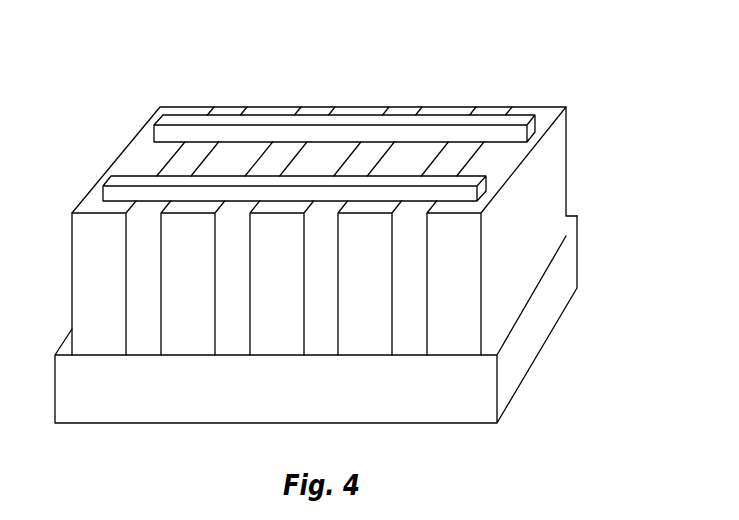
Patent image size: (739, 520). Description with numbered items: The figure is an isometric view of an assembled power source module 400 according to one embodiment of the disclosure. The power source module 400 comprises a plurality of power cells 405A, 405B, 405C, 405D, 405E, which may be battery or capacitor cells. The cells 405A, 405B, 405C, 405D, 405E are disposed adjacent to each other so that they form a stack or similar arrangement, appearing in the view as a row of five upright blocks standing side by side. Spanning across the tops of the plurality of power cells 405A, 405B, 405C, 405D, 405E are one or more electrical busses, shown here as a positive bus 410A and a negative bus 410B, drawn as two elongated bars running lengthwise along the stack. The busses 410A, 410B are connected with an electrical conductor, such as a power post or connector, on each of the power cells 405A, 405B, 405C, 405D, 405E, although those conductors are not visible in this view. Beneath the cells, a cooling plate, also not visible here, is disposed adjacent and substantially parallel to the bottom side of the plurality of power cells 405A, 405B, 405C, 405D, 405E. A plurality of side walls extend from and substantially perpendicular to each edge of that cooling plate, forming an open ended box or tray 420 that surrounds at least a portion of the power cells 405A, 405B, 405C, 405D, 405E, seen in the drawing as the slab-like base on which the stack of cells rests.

The power source module 400 is at (602, 73).
The power cell 405A is at (123, 346).
The power cell 405B is at (213, 346).
The power cell 405C is at (301, 346).
The power cell 405D is at (389, 346).
The power cell 405E is at (478, 346).
The positive bus 410A is at (117, 183).
The negative bus 410B is at (402, 121).
The tray 420 is at (545, 324).